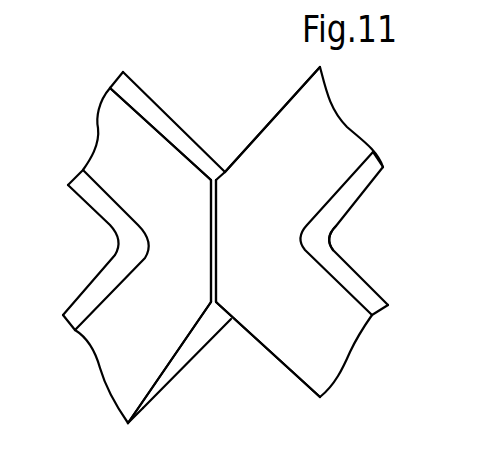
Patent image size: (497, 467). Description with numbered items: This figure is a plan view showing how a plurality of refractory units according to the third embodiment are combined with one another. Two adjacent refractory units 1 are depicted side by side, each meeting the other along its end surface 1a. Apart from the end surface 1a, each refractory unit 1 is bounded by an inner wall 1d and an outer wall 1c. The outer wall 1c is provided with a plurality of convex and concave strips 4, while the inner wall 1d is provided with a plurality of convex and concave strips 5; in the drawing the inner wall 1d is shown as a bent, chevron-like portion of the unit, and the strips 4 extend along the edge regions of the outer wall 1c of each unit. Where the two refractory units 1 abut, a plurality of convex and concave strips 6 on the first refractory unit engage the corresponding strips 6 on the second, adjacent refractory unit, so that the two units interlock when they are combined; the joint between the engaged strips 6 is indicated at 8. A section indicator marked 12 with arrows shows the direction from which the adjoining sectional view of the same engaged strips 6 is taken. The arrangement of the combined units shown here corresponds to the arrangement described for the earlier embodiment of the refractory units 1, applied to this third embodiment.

The refractory unit 1 is at (271, 108).
The end surface 1a is at (164, 155).
The outer wall 1c is at (166, 395).
The inner wall 1d is at (102, 226).
The convex and concave strips 4 is at (145, 102).
The convex and concave strips 5 is at (344, 266).
The convex and concave strips 6 is at (210, 240).
The joint gap 8 is at (204, 268).
The section line of FIG. 12 is at (50, 248).